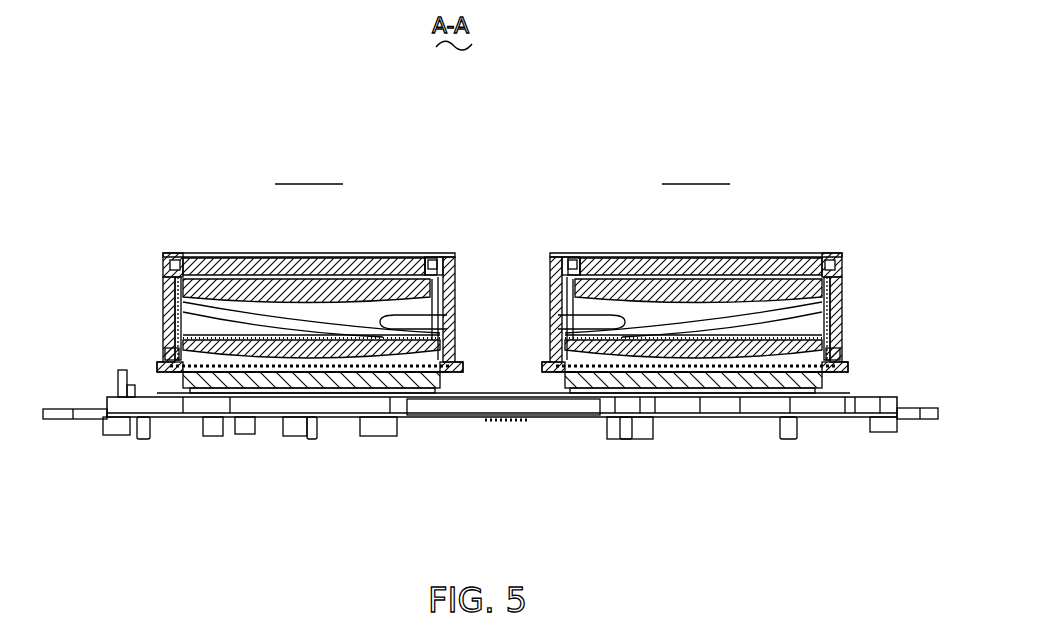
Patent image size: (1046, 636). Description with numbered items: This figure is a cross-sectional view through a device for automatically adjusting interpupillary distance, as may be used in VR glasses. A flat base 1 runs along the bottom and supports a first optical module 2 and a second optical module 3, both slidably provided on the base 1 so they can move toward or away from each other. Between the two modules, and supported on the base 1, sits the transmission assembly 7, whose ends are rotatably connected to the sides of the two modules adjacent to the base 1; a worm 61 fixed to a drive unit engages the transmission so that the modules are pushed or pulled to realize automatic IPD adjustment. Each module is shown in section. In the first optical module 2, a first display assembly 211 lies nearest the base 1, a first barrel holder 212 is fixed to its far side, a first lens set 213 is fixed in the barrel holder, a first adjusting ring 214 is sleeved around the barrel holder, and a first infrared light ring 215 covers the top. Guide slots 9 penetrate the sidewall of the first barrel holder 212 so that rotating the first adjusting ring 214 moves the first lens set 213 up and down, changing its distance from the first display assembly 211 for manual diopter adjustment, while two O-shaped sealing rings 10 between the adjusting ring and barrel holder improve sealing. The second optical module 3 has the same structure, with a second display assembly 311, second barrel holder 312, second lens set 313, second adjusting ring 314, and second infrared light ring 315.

The base 1 is at (172, 422).
The first optical module 2 is at (170, 249).
The second optical module 3 is at (848, 250).
The transmission assembly 7 is at (520, 400).
The guide slots 9 is at (430, 318).
The sealing rings 10 is at (170, 272).
The worm 61 is at (490, 422).
The first display assembly 211 is at (278, 400).
The first barrel holder 212 is at (176, 324).
The first lens set 213 is at (167, 352).
The first adjusting ring 214 is at (167, 300).
The first infrared light ring 215 is at (405, 257).
The second display assembly 311 is at (722, 400).
The second barrel holder 312 is at (838, 322).
The second lens set 313 is at (842, 352).
The second adjusting ring 314 is at (845, 270).
The second infrared light ring 315 is at (565, 256).